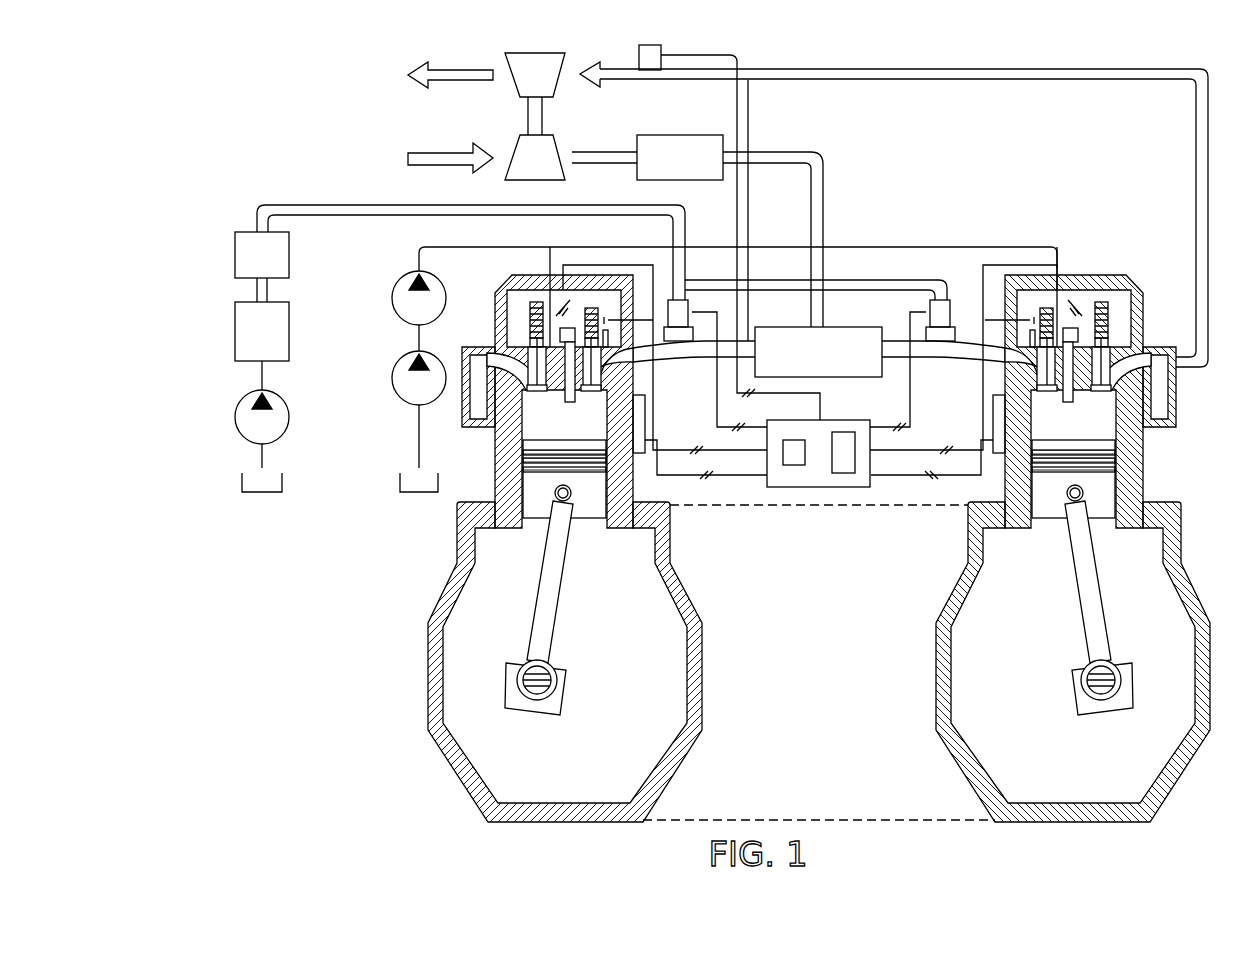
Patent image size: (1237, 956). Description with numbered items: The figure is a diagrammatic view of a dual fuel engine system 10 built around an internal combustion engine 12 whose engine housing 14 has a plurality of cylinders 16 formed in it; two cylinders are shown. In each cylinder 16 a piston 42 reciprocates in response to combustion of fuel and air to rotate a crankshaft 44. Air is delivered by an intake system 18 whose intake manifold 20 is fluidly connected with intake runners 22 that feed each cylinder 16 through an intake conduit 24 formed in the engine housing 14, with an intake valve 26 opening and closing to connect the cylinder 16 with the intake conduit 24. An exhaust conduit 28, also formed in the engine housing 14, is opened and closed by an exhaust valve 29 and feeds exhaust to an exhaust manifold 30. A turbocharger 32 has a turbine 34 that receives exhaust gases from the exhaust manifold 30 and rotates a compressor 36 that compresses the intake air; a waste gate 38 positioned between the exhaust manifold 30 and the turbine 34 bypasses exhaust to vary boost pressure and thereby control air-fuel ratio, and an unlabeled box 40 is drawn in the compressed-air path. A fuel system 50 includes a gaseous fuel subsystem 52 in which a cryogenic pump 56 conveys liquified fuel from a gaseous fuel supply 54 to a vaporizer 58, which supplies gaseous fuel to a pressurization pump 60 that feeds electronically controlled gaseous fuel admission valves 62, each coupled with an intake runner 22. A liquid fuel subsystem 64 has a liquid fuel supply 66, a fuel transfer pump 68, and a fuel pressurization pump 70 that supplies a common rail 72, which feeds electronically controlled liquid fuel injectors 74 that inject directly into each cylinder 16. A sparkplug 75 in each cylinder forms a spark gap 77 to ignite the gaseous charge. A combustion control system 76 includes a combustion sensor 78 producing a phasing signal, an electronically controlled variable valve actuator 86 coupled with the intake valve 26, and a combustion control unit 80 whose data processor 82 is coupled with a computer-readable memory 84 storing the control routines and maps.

The dual fuel engine system 10 is at (222, 118).
The internal combustion engine 12 is at (415, 582).
The engine housing 14 is at (428, 625).
The cylinder 16 is at (508, 425).
The intake system 18 is at (852, 182).
The intake manifold 20 is at (845, 327).
The intake runner 22 is at (702, 360).
The intake conduit 24 is at (628, 365).
The intake valve 26 is at (591, 392).
The exhaust conduit 28 is at (470, 352).
The exhaust valve 29 is at (537, 392).
The exhaust manifold 30 is at (488, 345).
The turbocharger 32 is at (552, 45).
The turbine 34 is at (522, 52).
The compressor 36 is at (520, 136).
The waste gate 38 is at (639, 50).
The charge air cooler 40 is at (683, 135).
The piston 42 is at (540, 505).
The crankshaft 44 is at (556, 686).
The fuel system 50 is at (290, 520).
The gaseous fuel subsystem 52 is at (230, 388).
The gaseous fuel supply 54 is at (284, 482).
The cryogenic pump 56 is at (290, 417).
The vaporizer 58 is at (290, 326).
The pressurization pump 60 is at (290, 254).
The gaseous fuel admission valve 62 is at (690, 305).
The liquid fuel subsystem 64 is at (400, 415).
The liquid fuel supply 66 is at (440, 484).
The fuel transfer pump 68 is at (392, 378).
The fuel pressurization pump 70 is at (392, 298).
The common rail 72 is at (947, 245).
The liquid fuel injector 74 is at (558, 388).
The sparkplug 75 is at (577, 335).
The combustion control system 76 is at (878, 492).
The spark gap 77 is at (570, 402).
The combustion sensor 78 is at (647, 425).
The combustion control unit 80 is at (805, 488).
The data processor 82 is at (795, 440).
The computer-readable memory 84 is at (844, 432).
The variable valve actuator 86 is at (610, 318).